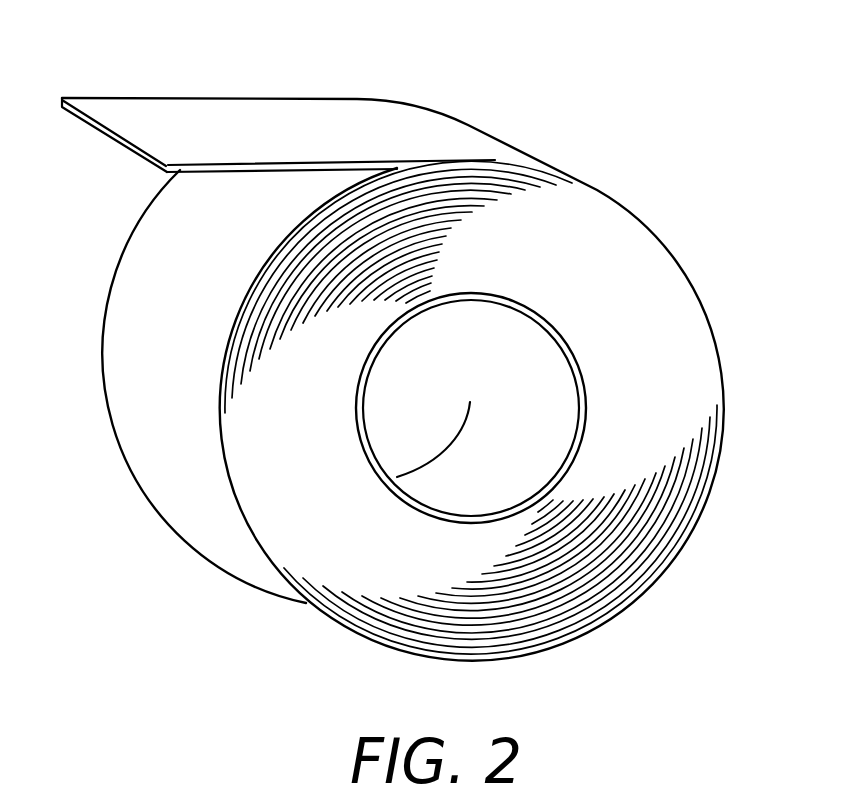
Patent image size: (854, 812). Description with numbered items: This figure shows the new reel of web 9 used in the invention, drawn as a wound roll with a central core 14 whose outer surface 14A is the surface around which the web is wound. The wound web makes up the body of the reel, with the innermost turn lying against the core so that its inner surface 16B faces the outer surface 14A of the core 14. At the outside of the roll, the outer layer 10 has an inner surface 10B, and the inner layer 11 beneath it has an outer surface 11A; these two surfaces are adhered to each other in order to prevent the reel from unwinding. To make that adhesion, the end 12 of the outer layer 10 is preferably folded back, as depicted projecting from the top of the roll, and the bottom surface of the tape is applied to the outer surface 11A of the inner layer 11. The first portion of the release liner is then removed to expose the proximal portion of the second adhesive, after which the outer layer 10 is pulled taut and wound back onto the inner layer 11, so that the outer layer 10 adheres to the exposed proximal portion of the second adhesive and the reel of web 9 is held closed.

The reel of web 9 is at (620, 558).
The outer layer 10 is at (292, 168).
The inner surface 10B is at (133, 156).
The inner layer 11 is at (283, 247).
The outer surface 11A is at (160, 241).
The end 12 is at (152, 112).
The core 14 is at (553, 329).
The outer surface 14A is at (580, 367).
The inner surface 16B is at (440, 300).